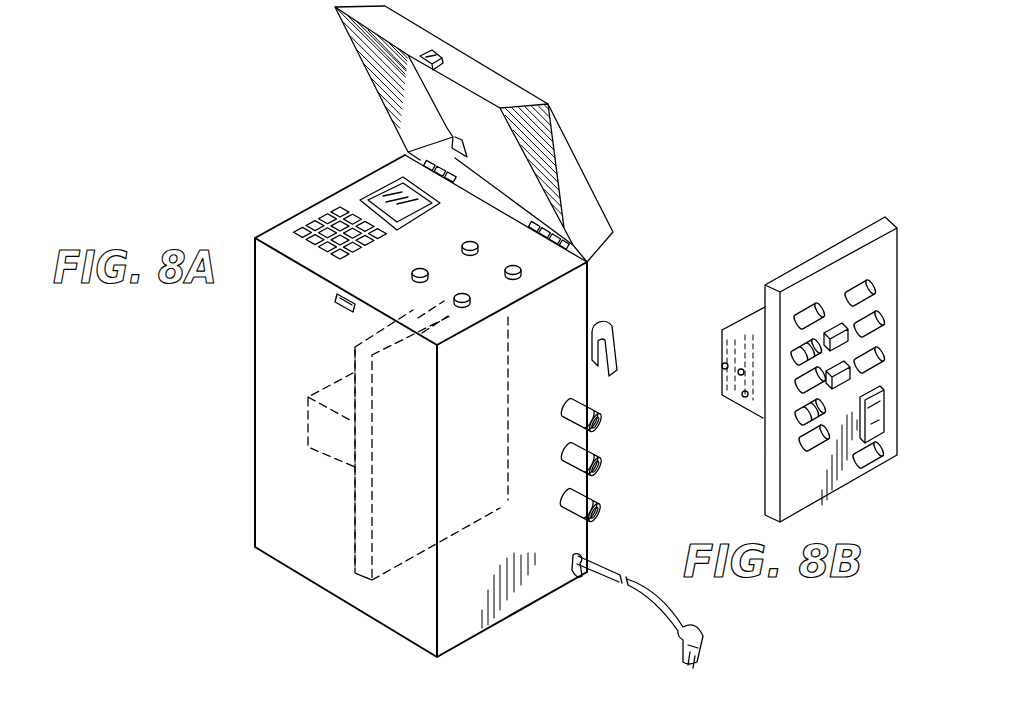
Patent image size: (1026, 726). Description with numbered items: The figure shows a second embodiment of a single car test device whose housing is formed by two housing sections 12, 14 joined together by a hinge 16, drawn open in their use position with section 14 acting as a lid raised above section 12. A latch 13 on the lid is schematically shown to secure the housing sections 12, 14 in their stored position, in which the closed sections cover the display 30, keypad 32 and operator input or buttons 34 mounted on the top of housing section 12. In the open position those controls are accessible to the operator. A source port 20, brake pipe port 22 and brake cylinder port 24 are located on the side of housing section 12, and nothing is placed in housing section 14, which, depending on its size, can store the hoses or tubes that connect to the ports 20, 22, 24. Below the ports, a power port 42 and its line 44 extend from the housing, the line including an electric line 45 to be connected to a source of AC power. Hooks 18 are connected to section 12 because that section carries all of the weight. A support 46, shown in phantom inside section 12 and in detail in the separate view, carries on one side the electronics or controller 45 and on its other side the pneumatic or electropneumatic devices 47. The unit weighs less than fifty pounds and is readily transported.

In FIG. 8A, the housing section 12 is at (270, 366).
In FIG. 8A, the latch 13 is at (445, 58).
In FIG. 8A, the housing section 14 is at (568, 184).
In FIG. 8A, the hinge 16 is at (422, 166).
In FIG. 8A, the hooks 18 is at (619, 341).
In FIG. 8A, the source port 20 is at (594, 407).
In FIG. 8A, the brake pipe port 22 is at (599, 462).
In FIG. 8A, the brake cylinder port 24 is at (594, 504).
In FIG. 8A, the display 30 is at (375, 196).
In FIG. 8A, the keypad 32 is at (302, 245).
In FIG. 8A, the operator input or buttons 34 is at (546, 264).
In FIG. 8A, the power port 42 is at (578, 572).
In FIG. 8A, the line 44 is at (665, 617).
In FIG. 8B, the electronics or controller 45 is at (738, 291).
In FIG. 8A, the support 46 is at (352, 503).
In FIG. 8B, the support 46 is at (800, 160).
In FIG. 8B, the pneumatic or electropneumatic devices 47 is at (852, 272).